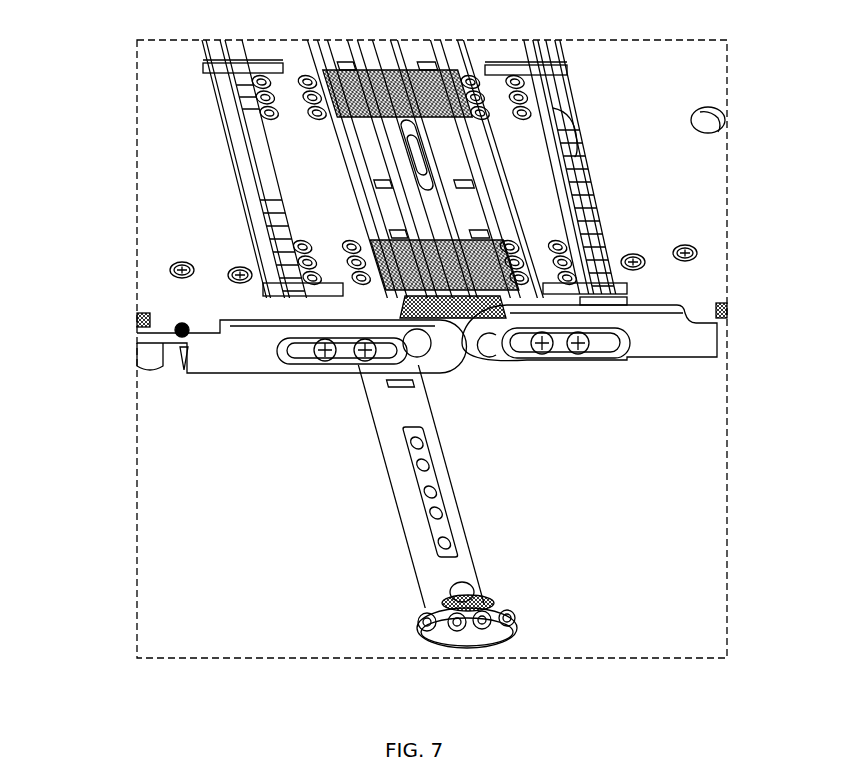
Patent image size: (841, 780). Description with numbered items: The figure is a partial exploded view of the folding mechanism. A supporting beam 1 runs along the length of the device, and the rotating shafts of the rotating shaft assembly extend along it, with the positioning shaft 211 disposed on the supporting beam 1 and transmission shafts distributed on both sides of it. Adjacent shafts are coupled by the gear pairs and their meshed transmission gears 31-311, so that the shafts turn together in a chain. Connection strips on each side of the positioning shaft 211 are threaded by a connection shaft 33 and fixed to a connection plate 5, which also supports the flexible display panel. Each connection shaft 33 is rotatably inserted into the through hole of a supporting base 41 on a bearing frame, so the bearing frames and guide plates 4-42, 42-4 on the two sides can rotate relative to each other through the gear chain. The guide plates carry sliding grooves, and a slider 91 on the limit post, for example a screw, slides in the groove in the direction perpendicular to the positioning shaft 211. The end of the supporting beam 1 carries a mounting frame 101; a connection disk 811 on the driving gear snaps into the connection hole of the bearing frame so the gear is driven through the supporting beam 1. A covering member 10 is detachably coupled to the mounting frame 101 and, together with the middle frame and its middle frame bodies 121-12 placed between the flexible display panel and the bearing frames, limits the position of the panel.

The supporting beam 1 is at (410, 517).
The connection plate 5 is at (284, 50).
The covering member 10 is at (380, 273).
The connection shaft 33 is at (296, 333).
The supporting base 41 is at (265, 290).
The bearing frame / guide plate 4-42 is at (245, 355).
The guide plate / bearing frame 42-4 is at (675, 340).
The slider 91 is at (593, 353).
The connection disk 811 is at (492, 348).
The mounting frame 101 is at (443, 637).
The middle frame body / middle frame 121-12 is at (165, 70).
The positioning shaft 211 is at (382, 52).
The gear pair / transmission gear 31-311 is at (380, 253).